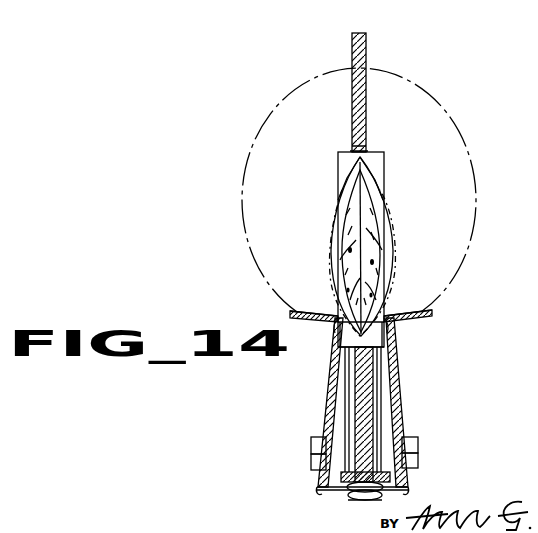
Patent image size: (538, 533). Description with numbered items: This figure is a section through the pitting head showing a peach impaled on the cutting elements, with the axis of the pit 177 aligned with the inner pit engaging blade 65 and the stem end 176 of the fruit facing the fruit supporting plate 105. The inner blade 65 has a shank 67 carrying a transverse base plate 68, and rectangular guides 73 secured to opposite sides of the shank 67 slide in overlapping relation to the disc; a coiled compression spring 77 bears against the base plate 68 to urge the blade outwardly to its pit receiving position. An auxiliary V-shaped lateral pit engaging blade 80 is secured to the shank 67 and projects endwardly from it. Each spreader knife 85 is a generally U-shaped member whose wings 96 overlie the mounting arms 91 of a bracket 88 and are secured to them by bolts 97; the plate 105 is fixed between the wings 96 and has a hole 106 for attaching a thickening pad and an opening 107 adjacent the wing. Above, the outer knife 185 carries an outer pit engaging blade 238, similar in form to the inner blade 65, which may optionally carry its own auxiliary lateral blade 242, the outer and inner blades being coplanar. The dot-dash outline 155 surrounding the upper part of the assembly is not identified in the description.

The outer knife 185 is at (371, 44).
The blade sweep envelope 155 is at (430, 97).
The outer pit engaging blade 238 is at (372, 150).
The auxiliary lateral pit-engaging blade 242 is at (385, 160).
The pit 177 is at (396, 292).
The fruit supporting plate 105 is at (292, 311).
The hole 106 is at (309, 310).
The opening 107 is at (334, 334).
The stem end 176 is at (386, 330).
The auxiliary V-shaped lateral pit engaging blade 80 is at (386, 340).
The inner pit engaging blade 65 is at (352, 385).
The rectangular guides 73 is at (350, 400).
The shank 67 is at (373, 390).
The spreader knife 85 is at (324, 422).
The mounting arms 91 is at (394, 432).
The wings 96 is at (320, 442).
The bolts 97 is at (316, 456).
The base plate 68 is at (391, 477).
The mounting bracket 88 is at (318, 496).
The coiled compression springs 77 is at (366, 501).